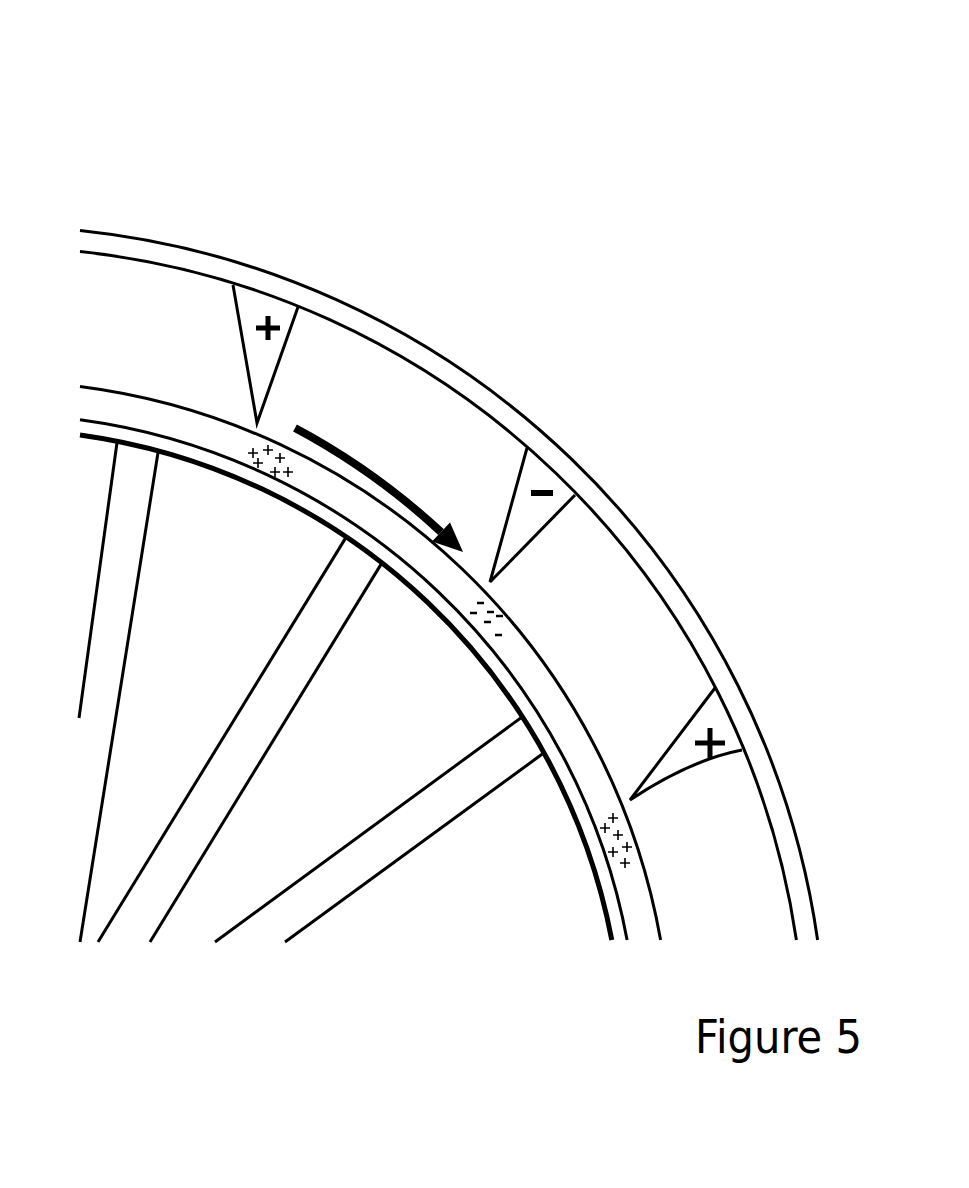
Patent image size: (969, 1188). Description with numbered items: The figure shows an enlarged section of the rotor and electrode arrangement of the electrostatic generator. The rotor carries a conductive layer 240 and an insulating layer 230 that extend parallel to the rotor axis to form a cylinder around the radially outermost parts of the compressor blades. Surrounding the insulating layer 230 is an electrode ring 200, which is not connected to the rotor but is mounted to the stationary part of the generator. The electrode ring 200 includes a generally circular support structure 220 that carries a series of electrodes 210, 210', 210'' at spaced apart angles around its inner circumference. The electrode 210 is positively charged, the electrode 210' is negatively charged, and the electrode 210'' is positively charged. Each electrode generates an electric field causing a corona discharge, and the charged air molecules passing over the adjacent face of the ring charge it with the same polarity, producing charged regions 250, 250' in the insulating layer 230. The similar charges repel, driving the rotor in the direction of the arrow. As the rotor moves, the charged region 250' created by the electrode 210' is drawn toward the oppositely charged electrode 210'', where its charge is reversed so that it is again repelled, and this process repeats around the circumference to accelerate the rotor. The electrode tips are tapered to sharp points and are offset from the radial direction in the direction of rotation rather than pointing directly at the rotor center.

The electrode ring 200 is at (106, 218).
The electrode 210 is at (341, 267).
The electrode 210' is at (622, 470).
The electrode 210'' is at (773, 677).
The support structure 220 is at (400, 345).
The insulating layer 230 is at (547, 695).
The conductive layer 240 is at (610, 900).
The charged region 250 is at (231, 329).
The charged region 250' is at (603, 554).